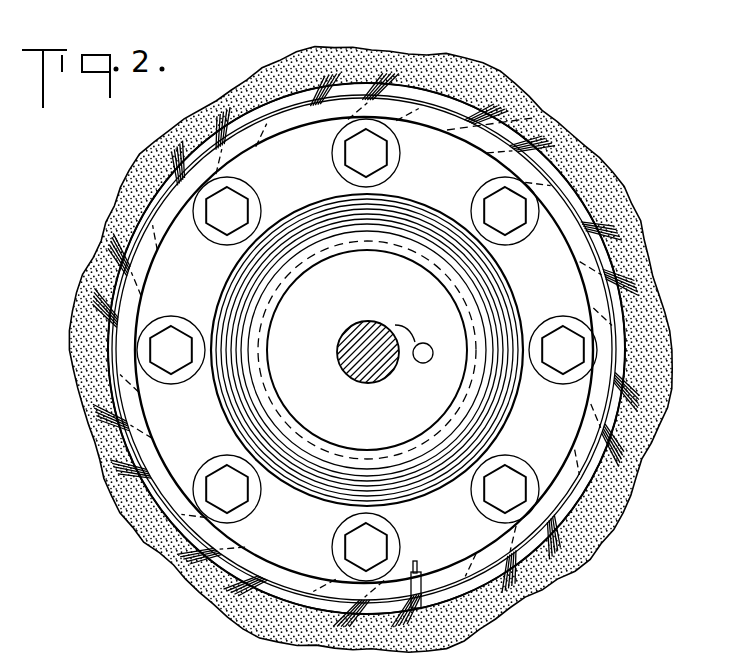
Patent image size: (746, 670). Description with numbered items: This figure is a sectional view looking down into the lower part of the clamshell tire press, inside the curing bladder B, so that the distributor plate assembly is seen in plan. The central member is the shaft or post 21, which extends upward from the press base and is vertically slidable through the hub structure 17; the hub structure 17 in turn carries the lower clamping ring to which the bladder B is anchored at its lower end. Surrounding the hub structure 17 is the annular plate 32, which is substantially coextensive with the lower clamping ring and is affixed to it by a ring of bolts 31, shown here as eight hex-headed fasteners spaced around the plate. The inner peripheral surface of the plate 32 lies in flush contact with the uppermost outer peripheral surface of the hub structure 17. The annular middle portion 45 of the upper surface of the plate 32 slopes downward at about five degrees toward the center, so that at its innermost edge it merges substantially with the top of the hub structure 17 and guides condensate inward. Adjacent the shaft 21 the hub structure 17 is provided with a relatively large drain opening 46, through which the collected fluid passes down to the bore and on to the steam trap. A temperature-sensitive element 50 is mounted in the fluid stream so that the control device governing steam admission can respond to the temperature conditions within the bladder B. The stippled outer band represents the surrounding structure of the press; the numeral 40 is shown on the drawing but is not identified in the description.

The curing bladder B is at (560, 587).
The lining 40 is at (598, 186).
The annular plate 32 is at (567, 433).
The bolts 31 is at (510, 235).
The hub structure 17 is at (400, 265).
The annular middle portion 45 is at (350, 232).
The shaft or post 21 is at (376, 378).
The drain opening 46 is at (428, 344).
The temperature-sensitive elements 50 is at (419, 580).